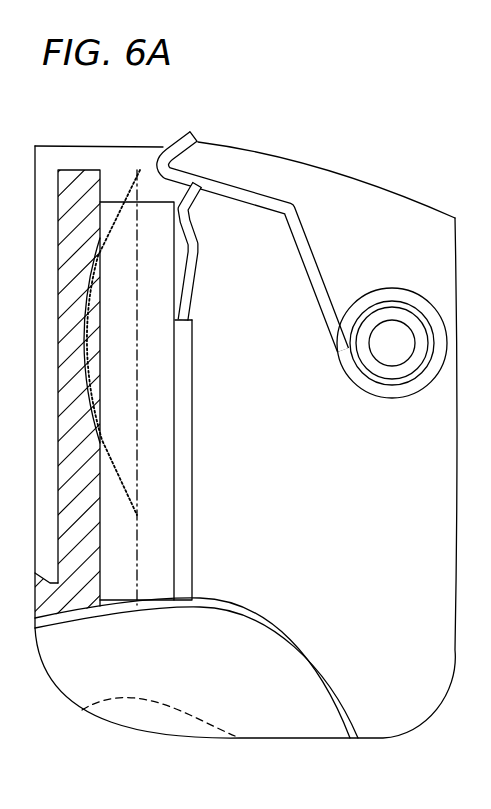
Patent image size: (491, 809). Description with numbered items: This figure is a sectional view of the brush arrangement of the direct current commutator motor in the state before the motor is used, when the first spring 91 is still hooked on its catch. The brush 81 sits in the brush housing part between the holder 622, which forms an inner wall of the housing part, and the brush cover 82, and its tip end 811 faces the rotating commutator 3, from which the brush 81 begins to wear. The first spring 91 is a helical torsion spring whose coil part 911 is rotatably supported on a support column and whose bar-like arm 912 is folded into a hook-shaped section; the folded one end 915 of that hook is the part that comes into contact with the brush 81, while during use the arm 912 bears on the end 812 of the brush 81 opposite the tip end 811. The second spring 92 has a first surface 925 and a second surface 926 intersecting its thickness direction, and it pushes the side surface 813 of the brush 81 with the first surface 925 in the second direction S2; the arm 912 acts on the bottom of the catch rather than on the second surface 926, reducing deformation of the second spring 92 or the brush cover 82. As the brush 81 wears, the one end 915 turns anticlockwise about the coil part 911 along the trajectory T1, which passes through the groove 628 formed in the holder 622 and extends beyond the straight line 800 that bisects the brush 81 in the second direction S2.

The commutator 3 is at (247, 648).
The brush 81 is at (168, 374).
The brush cover 82 is at (203, 466).
The first spring 91 is at (284, 249).
The second spring 92 is at (219, 238).
The holder 622 is at (77, 172).
The groove 628 is at (93, 362).
The straight line 800 is at (196, 638).
The tip end 811 is at (155, 590).
The end 812 is at (110, 207).
The side surface 813 is at (189, 290).
The coil part 911 is at (389, 293).
The arm 912 is at (242, 225).
The one end 915 is at (157, 142).
The first surface 925 is at (167, 210).
The second surface 926 is at (205, 207).
The second direction S2 is at (212, 385).
The trajectory T1 is at (143, 518).